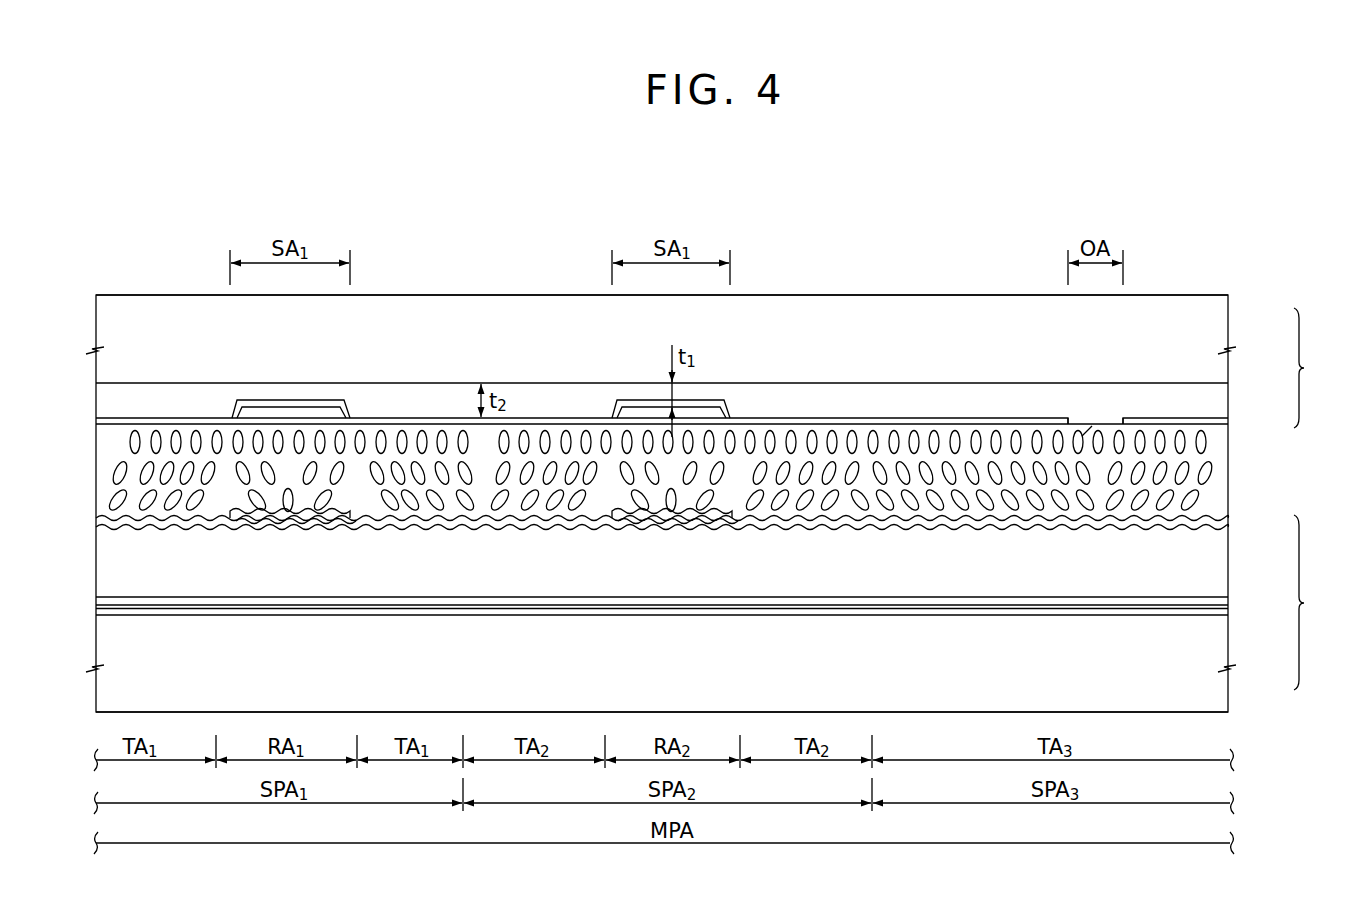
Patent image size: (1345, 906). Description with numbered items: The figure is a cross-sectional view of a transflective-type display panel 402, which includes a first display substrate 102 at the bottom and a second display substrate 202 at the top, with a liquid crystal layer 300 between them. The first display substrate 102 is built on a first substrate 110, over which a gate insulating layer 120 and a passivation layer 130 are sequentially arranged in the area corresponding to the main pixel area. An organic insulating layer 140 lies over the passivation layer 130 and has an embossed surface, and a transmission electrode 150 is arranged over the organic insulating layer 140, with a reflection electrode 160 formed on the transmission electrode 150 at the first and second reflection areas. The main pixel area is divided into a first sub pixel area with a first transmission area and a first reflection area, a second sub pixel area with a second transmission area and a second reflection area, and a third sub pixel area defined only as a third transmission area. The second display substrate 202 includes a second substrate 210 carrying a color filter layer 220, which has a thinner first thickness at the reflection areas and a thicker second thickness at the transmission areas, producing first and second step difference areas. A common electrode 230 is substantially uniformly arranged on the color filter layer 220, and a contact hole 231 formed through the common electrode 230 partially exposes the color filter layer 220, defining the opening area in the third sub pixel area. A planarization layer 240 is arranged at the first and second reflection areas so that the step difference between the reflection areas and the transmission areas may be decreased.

The transflective-type display panel 402 is at (678, 192).
The first display substrate 102 is at (1319, 602).
The first substrate 110 is at (1228, 681).
The gate insulating layer 120 is at (1228, 612).
The passivation layer 130 is at (1228, 599).
The organic insulating layer 140 is at (1228, 558).
The transmission electrode 150 is at (1228, 527).
The reflection electrode 160 is at (289, 522).
The second display substrate 202 is at (1319, 368).
The second substrate 210 is at (1228, 319).
The color filter layer 220 is at (1228, 386).
The common electrode 230 is at (1228, 421).
The contact hole 231 is at (1063, 440).
The planarization layer 240 is at (261, 416).
The liquid crystal layer 300 is at (1214, 476).